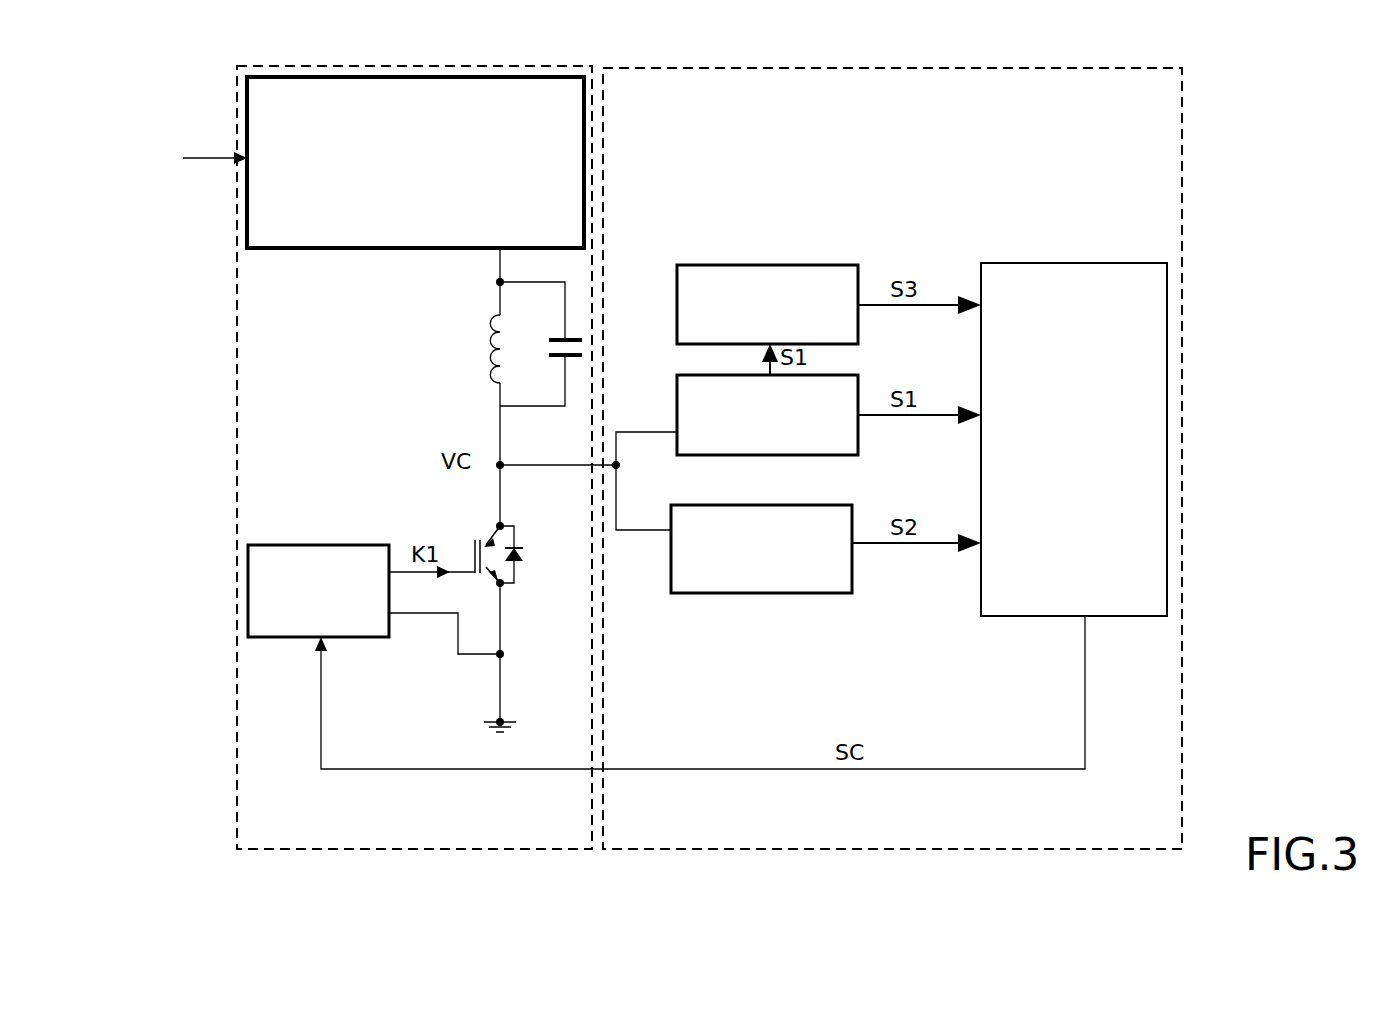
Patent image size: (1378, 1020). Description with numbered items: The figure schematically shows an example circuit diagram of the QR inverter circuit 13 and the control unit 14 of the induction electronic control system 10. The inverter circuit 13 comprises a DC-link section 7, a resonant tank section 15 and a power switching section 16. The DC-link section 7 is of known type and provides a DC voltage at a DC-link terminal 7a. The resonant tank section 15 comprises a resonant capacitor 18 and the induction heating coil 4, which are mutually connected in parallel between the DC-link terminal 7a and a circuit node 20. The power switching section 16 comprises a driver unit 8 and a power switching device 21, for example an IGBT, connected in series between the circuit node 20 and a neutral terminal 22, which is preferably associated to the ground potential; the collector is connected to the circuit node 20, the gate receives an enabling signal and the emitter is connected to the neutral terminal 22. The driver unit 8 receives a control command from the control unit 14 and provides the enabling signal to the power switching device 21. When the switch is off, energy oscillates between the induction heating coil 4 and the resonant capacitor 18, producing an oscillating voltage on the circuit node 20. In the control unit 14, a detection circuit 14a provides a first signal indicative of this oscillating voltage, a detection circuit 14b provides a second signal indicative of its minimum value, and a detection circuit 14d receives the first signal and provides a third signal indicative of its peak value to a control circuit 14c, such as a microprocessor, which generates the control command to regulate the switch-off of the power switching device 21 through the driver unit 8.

The DC-link section 7 is at (383, 162).
The DC-link terminal 7a is at (500, 282).
The induction heating coil 4 is at (490, 345).
The resonant tank section 15 is at (478, 370).
The resonant capacitor 18 is at (549, 340).
The circuit node 20 is at (500, 465).
The power switching device 21 is at (465, 536).
The power switching section 16 is at (526, 565).
The neutral terminal 22 is at (500, 722).
The driver unit 8 is at (376, 601).
The inverter circuit 13 is at (518, 66).
The control unit 14 is at (705, 68).
The detection circuit 14a is at (767, 415).
The detection circuit 14b is at (761, 549).
The control circuit 14c is at (1074, 439).
The detection circuit 14d is at (767, 304).
The electronic control system 10 is at (152, 750).